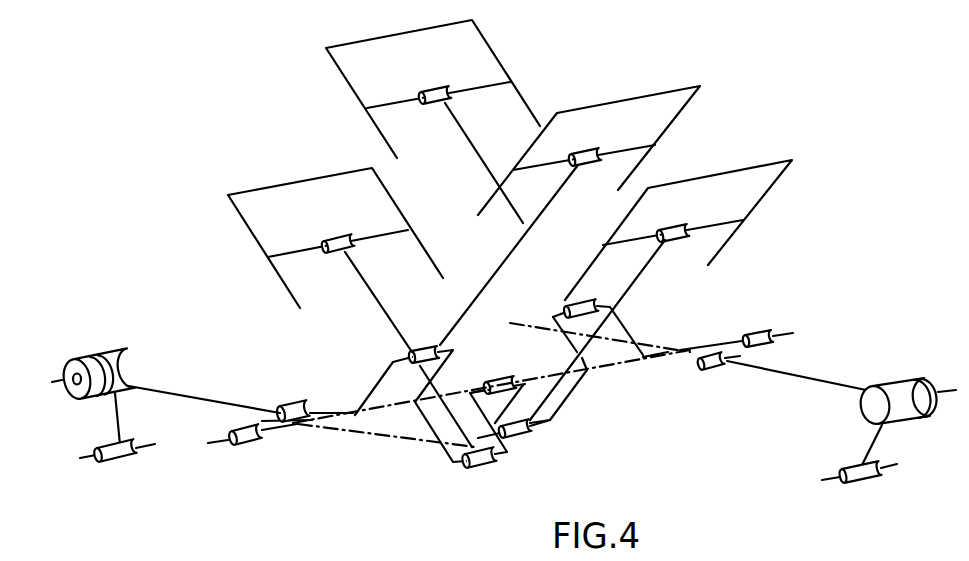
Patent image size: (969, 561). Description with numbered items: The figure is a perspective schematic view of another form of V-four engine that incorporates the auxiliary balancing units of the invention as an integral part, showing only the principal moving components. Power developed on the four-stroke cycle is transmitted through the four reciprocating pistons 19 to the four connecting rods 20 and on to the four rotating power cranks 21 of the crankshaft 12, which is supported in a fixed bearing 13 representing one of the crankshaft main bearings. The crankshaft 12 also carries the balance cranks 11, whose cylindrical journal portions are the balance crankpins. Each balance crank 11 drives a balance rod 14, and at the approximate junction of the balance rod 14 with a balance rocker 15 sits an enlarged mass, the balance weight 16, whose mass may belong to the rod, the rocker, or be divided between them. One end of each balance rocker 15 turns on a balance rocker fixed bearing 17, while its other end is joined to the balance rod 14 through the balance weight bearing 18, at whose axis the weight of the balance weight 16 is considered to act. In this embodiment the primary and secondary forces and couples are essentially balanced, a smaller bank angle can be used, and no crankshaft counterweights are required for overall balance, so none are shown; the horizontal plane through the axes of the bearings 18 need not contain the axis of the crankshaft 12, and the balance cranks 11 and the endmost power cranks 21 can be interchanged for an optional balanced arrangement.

The balance crank 11 is at (332, 405).
The crankshaft 12 is at (283, 430).
The fixed bearing 13 is at (247, 447).
The balance rod 14 is at (230, 400).
The balance rocker 15 is at (120, 420).
The balance weight 16 is at (90, 351).
The balance rocker fixed bearing 17 is at (118, 463).
The balance weight bearing 18 is at (57, 385).
The piston 19 is at (496, 44).
The connecting rod 20 is at (470, 128).
The power crank 21 is at (384, 367).